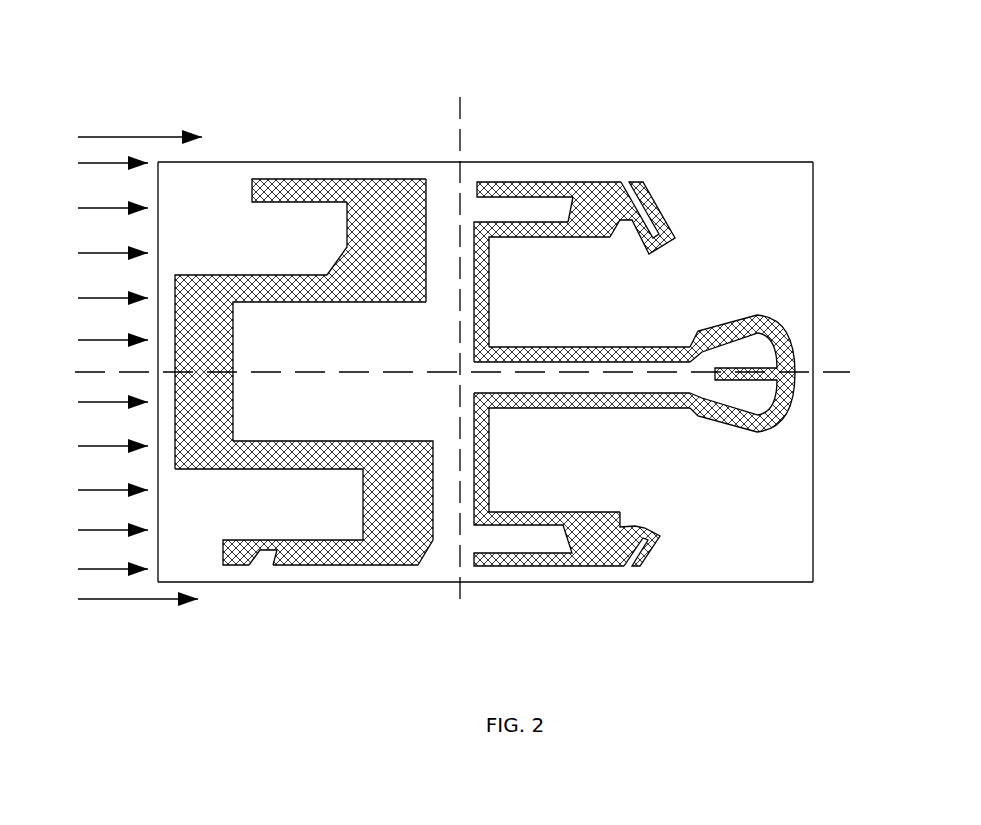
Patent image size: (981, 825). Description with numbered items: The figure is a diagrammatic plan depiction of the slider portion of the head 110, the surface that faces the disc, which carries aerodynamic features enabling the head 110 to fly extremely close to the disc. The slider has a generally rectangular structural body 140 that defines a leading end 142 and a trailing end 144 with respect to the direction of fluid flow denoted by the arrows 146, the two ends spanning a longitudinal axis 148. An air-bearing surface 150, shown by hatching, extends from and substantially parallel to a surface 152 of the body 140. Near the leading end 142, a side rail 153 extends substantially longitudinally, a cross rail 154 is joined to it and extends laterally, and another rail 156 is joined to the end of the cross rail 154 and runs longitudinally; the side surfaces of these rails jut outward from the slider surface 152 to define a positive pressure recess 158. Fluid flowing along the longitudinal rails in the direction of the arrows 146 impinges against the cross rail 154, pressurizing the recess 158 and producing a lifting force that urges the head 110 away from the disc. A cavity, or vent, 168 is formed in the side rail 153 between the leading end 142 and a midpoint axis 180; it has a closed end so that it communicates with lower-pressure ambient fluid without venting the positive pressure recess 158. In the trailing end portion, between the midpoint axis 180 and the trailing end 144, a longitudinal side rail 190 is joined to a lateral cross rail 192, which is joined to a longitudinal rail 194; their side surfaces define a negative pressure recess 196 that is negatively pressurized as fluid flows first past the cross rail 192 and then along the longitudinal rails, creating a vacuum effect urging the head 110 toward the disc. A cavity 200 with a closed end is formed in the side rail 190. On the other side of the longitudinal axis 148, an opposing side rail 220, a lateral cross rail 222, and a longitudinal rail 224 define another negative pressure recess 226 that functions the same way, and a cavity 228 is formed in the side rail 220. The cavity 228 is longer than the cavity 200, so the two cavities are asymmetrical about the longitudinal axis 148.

The head 110 is at (296, 41).
The structural body 140 is at (337, 161).
The leading end 142 is at (157, 326).
The trailing end 144 is at (813, 238).
The arrows denoting fluid flow direction 146 is at (93, 163).
The longitudinal axis 148 is at (843, 375).
The air-bearing surface 150 is at (489, 224).
The surface of the body 152 is at (222, 181).
The side rail 153 is at (320, 558).
The cross rail 154 is at (392, 524).
The rail 156 is at (303, 440).
The positive pressure recess 158 is at (240, 517).
The cavity 168 is at (257, 564).
The midpoint axis 180 is at (458, 590).
The longitudinal side rail 190 is at (593, 556).
The lateral cross rail 192 is at (473, 440).
The longitudinal rail 194 is at (541, 409).
The negative pressure recess 196 is at (654, 471).
The cavity 200 is at (622, 569).
The opposing longitudinal side rail 220 is at (598, 181).
The lateral cross rail 222 is at (474, 295).
The longitudinal rail 224 is at (541, 346).
The negative pressure recess 226 is at (647, 280).
The cavity 228 is at (625, 181).